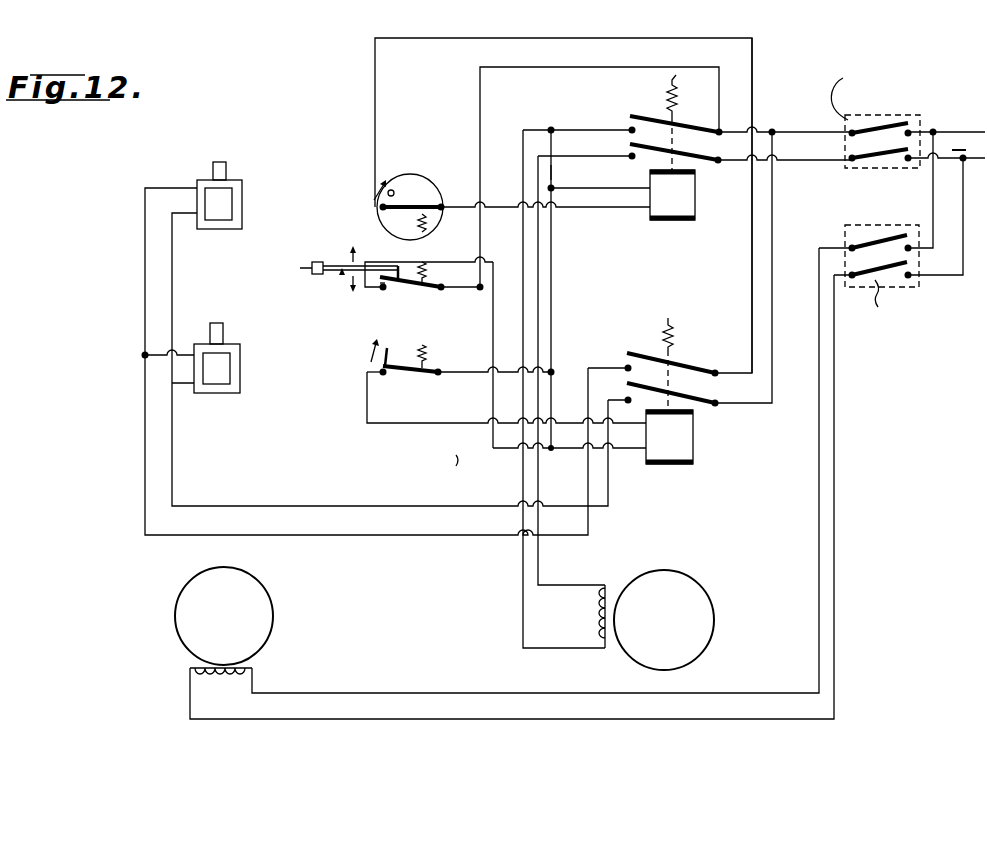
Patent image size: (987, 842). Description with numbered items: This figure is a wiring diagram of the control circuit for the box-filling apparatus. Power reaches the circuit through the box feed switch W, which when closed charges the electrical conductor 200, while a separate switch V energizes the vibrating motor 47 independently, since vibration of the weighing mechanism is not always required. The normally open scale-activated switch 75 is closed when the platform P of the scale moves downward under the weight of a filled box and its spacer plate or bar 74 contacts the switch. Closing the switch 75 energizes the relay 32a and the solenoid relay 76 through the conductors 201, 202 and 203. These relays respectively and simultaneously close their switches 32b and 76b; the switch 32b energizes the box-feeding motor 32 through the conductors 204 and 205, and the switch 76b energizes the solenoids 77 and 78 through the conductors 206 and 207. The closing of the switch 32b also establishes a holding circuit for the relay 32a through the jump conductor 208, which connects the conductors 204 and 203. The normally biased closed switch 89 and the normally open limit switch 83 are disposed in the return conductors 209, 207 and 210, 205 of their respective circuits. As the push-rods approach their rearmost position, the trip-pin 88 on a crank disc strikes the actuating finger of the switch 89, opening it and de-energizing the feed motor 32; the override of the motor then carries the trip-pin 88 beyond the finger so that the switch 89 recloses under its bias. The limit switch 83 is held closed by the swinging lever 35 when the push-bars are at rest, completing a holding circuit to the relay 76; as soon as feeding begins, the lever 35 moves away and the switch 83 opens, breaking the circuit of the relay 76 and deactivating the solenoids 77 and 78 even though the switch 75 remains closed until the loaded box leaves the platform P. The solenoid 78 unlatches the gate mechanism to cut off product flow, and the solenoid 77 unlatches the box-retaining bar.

The return conductor 209 is at (609, 38).
The electrical conductor 200 is at (586, 68).
The trip-pin 88 is at (391, 189).
The switch 89 is at (420, 201).
The conductor 207 is at (603, 360).
The conductor 206 is at (772, 230).
The conductor 204 is at (572, 130).
The conductor 205 is at (572, 157).
The conductor 203 is at (590, 188).
The jump conductor 208 is at (552, 172).
The relay switch 32b is at (678, 140).
The relay 32a is at (683, 223).
The spacer plate 74 is at (396, 270).
The scale-activated switch 75 is at (398, 292).
The platform P is at (335, 262).
The conductor 201 is at (493, 302).
The limit switch 83 is at (403, 363).
The swinging lever 35 is at (388, 350).
The return conductor 210 is at (422, 423).
The conductor 202 is at (563, 449).
The relay switch 76b is at (675, 373).
The solenoid relay 76 is at (676, 447).
The box feed switch W is at (886, 165).
The switch V is at (910, 283).
The solenoid 78 is at (227, 205).
The solenoid 77 is at (225, 370).
The vibrating motor 47 is at (253, 627).
The box-feeding motor 32 is at (693, 640).